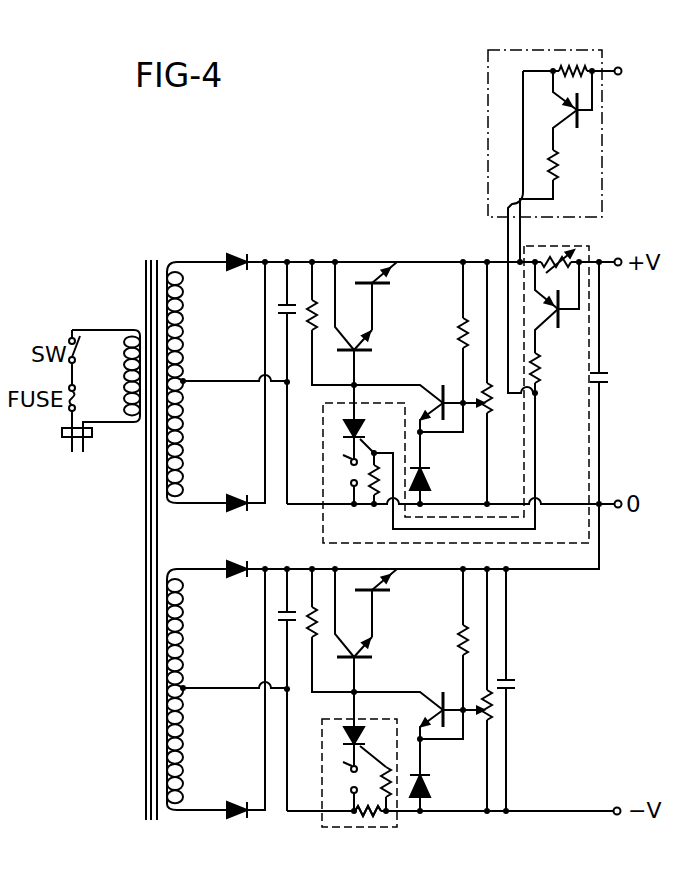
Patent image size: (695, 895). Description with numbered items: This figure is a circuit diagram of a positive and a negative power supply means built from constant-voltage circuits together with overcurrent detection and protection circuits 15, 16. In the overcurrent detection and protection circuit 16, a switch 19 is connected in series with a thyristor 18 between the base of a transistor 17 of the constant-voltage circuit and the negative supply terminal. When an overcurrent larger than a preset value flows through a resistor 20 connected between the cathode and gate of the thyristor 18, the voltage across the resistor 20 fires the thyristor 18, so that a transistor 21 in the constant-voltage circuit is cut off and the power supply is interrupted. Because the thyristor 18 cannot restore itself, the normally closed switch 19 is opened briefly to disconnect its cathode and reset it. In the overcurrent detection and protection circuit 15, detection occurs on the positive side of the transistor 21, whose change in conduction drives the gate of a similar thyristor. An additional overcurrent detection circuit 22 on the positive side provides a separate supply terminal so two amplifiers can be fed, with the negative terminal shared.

The overcurrent detection and protection circuit 15 is at (584, 249).
The overcurrent detection and protection circuit 16 is at (389, 827).
The transistor 17 is at (373, 331).
The thyristor 18 is at (345, 733).
The switch 19 is at (345, 778).
The resistor 20 is at (367, 815).
The transistor 21 is at (561, 316).
The overcurrent detection circuit 22 is at (530, 57).